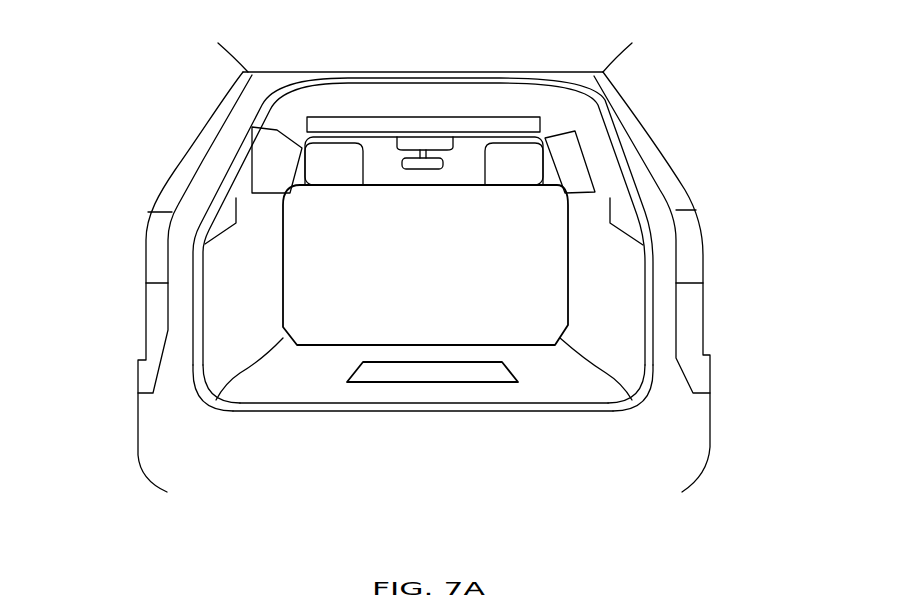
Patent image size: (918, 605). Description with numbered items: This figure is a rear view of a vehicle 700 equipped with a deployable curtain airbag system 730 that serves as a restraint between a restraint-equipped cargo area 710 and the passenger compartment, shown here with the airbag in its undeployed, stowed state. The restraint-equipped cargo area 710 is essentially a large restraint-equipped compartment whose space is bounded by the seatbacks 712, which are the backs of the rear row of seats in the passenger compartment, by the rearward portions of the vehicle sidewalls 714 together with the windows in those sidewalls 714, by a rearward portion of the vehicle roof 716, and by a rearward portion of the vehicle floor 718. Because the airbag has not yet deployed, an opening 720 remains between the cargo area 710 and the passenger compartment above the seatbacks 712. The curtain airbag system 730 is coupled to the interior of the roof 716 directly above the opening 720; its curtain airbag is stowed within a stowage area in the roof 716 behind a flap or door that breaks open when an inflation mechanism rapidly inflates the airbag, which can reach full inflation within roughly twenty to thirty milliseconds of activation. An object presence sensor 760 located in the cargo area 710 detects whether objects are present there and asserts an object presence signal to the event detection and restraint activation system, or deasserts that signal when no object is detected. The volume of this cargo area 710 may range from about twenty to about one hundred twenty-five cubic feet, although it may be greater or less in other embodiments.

The vehicle 700 is at (106, 92).
The restraint-equipped cargo area 710 is at (497, 282).
The seatbacks 712 is at (492, 240).
The vehicle sidewalls 714 is at (248, 283).
The vehicle roof 716 is at (462, 105).
The vehicle floor 718 is at (298, 382).
The opening 720 is at (465, 165).
The curtain airbag system 730 is at (423, 117).
The object presence sensor 760 is at (436, 372).